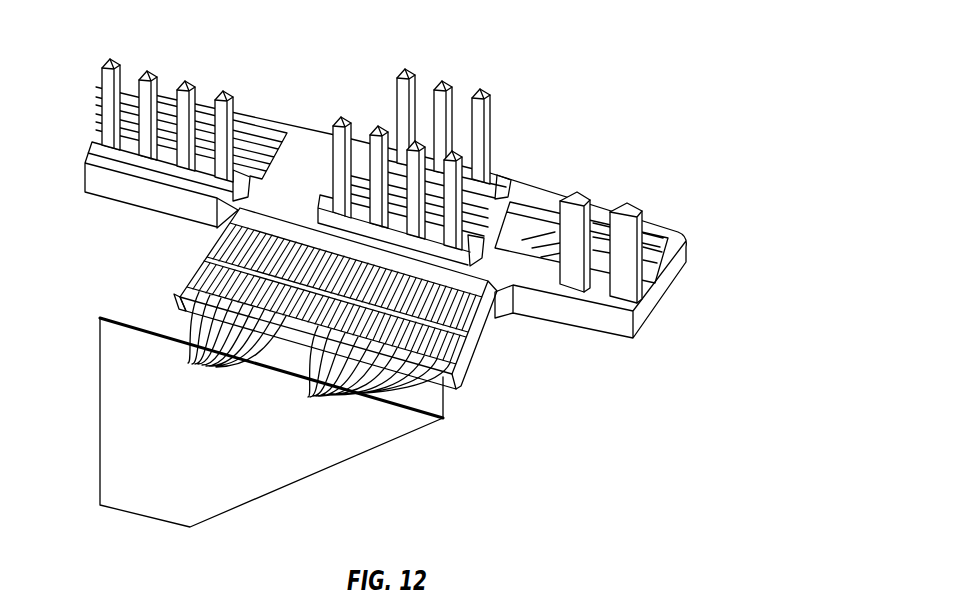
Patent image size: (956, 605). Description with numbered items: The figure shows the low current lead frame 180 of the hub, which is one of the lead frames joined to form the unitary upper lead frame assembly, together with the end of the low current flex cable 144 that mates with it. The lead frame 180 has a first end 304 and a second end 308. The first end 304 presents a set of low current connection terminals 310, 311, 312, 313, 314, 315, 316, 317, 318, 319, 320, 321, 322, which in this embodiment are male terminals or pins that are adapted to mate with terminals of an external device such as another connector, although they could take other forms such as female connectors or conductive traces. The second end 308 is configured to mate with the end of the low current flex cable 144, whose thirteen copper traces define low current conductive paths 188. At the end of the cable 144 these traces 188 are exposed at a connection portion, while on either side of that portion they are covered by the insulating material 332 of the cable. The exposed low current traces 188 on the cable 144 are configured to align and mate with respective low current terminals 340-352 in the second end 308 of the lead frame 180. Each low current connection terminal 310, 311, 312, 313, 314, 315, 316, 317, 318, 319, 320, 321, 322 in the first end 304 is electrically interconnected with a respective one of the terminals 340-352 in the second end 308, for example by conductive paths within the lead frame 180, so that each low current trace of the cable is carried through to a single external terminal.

The low current lead frame 180 is at (431, 242).
The first end 304 is at (660, 303).
The second end 308 is at (461, 372).
The low current connection terminal 310 is at (109, 60).
The low current connection terminal 311 is at (147, 72).
The low current connection terminal 312 is at (184, 82).
The low current connection terminal 313 is at (222, 92).
The low current connection terminal 314 is at (340, 118).
The low current connection terminal 315 is at (404, 70).
The low current connection terminal 316 is at (377, 127).
The low current connection terminal 317 is at (417, 142).
The low current connection terminal 318 is at (438, 84).
The low current connection terminal 319 is at (479, 92).
The low current connection terminal 320 is at (455, 154).
The low current connection terminal 321 is at (576, 192).
The low current connection terminal 322 is at (627, 204).
The insulating material 332 is at (238, 214).
The low current terminals 340-352 is at (477, 306).
The low current conductive path 188 is at (308, 397).
The low current flex cable 144 is at (110, 468).